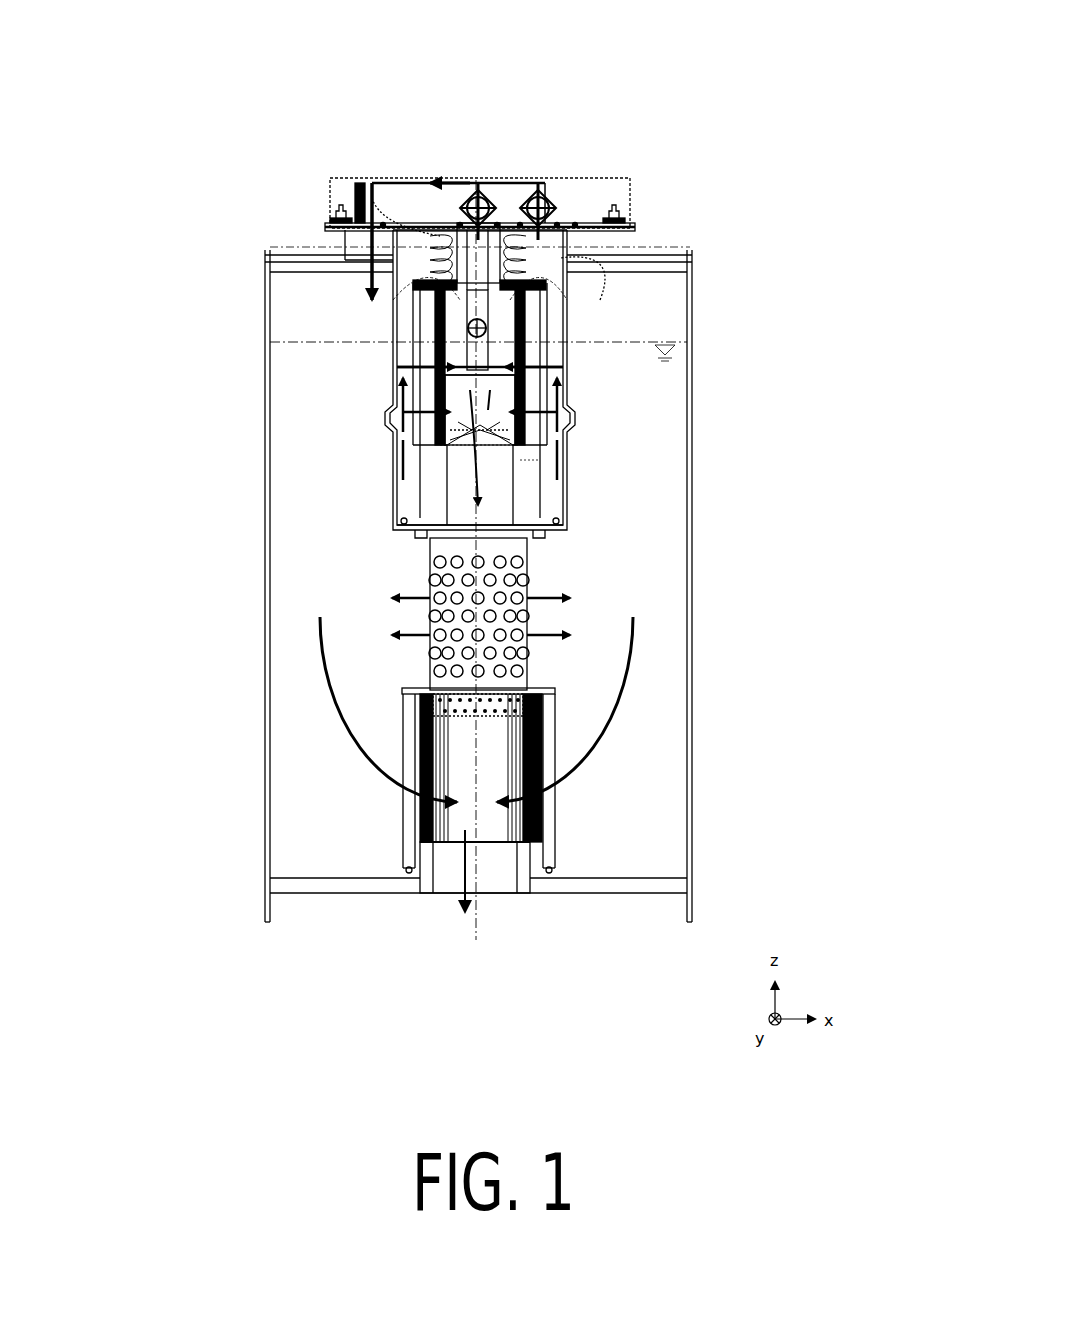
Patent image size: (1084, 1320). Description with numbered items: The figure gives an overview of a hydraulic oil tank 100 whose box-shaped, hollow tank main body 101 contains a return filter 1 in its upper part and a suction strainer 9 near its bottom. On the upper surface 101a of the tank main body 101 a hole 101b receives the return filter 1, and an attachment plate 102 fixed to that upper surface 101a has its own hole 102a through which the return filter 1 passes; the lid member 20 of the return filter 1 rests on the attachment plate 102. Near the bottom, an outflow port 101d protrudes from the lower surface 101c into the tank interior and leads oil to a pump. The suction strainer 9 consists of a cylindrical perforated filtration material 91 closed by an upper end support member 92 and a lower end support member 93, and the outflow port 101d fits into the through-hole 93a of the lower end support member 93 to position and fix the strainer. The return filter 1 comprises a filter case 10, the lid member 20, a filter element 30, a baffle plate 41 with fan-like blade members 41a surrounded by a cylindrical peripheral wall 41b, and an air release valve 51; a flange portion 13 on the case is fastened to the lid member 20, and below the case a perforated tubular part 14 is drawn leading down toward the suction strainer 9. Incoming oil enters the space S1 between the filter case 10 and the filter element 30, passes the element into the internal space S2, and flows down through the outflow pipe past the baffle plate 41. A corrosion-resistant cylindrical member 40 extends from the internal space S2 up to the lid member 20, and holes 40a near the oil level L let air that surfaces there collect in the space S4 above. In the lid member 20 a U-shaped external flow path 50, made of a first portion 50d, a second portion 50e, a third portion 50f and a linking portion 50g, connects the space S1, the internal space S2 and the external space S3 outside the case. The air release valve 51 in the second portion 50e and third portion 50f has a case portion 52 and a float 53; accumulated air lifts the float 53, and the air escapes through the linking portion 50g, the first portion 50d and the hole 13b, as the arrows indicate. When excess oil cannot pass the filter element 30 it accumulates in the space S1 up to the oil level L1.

The hydraulic oil tank 100 is at (775, 123).
The return filter 1 is at (178, 285).
The filter case 10 is at (395, 416).
The flange portion 13 is at (435, 345).
The hole 13b is at (413, 285).
The perforated tube 14 is at (432, 568).
The lid member 20 is at (355, 233).
The filter element 30 is at (445, 372).
The cylindrical member 40 is at (328, 215).
The holes 40a is at (580, 303).
The baffle plate 41 is at (170, 510).
The blade members 41a is at (452, 455).
The peripheral wall 41b is at (462, 438).
The external flow path 50 is at (556, 116).
The first portion 50d is at (372, 183).
The second portion 50e is at (478, 183).
The third portion 50f is at (538, 183).
The linking portion 50g is at (420, 183).
The air release valve 51 is at (358, 183).
The case portion 52 is at (548, 215).
The float 53 is at (562, 228).
The suction strainer 9 is at (765, 705).
The filtration material 91 is at (520, 778).
The upper end support member 92 is at (556, 691).
The lower end support member 93 is at (548, 866).
The through-hole 93a is at (548, 845).
The tank main body 101 is at (692, 388).
The upper surface 101a is at (692, 258).
The hole 101b is at (600, 300).
The lower surface 101c is at (606, 895).
The outflow port 101d is at (528, 866).
The attachment plate 102 is at (636, 232).
The hole 102a is at (622, 218).
The oil level L is at (700, 342).
The oil level L1 is at (572, 250).
The space S1 is at (545, 485).
The internal space S2 is at (530, 400).
The external space S3 is at (668, 592).
The space S4 is at (343, 200).